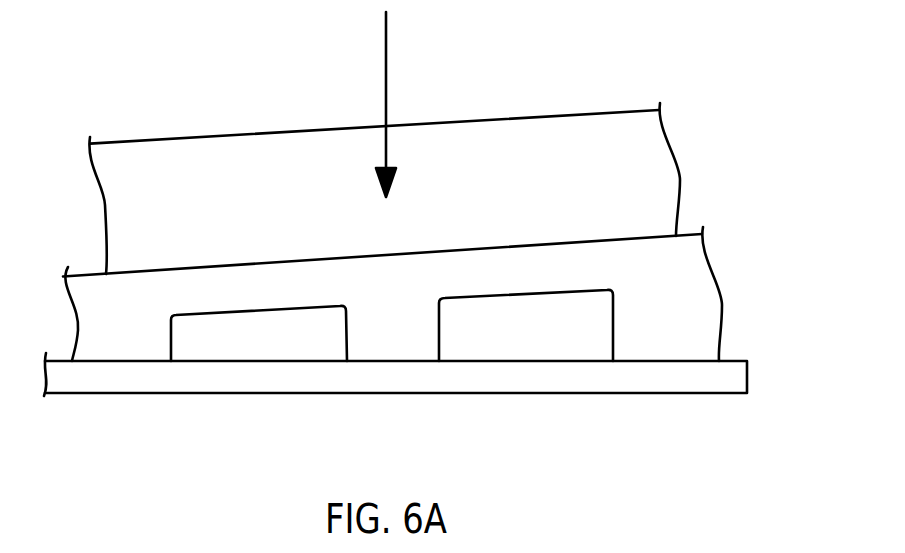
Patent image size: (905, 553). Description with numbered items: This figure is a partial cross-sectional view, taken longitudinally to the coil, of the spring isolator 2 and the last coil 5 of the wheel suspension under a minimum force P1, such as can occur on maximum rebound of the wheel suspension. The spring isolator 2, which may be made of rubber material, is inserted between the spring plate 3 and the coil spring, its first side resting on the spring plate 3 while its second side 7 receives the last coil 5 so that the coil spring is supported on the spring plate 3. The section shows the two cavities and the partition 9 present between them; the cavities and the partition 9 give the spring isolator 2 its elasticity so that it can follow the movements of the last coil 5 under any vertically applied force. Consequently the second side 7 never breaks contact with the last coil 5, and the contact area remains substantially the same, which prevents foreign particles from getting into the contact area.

The spring isolator 2 is at (702, 296).
The spring plate 3 is at (733, 380).
The last coil 5 is at (650, 178).
The second side 7 is at (90, 272).
The partition 9 is at (367, 343).
The minimum force P1 is at (386, 43).